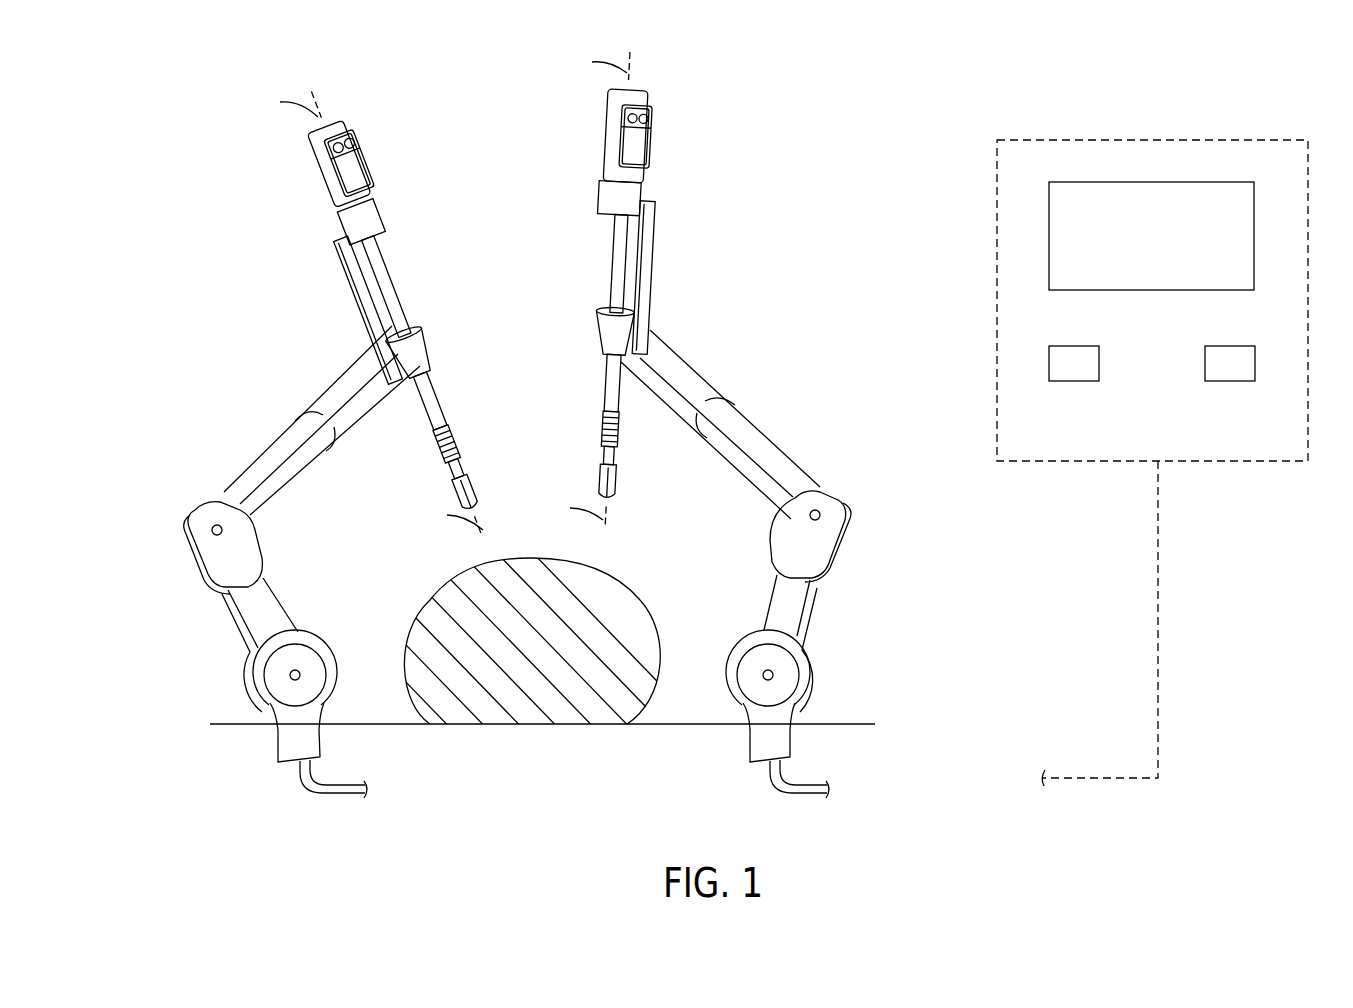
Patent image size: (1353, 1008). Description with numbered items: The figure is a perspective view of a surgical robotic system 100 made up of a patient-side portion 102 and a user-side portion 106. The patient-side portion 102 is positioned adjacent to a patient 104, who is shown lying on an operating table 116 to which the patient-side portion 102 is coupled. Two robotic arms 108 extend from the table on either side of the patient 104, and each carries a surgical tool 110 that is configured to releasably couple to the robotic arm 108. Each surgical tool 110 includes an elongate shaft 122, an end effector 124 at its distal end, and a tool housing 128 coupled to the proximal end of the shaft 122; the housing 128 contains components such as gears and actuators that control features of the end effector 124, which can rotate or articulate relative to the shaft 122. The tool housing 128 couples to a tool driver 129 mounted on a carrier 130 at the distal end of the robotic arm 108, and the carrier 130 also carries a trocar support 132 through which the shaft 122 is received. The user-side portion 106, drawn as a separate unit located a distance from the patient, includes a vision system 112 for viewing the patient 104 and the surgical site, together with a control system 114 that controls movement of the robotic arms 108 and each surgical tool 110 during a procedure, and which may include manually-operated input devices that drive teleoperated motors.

The surgical robotic system 100 is at (160, 132).
The patient-side portion 102 is at (784, 140).
The patient 104 is at (628, 593).
The user-side portion 106 is at (1152, 419).
The robotic arm 108 is at (273, 437).
The surgical tool 110 is at (400, 129).
The vision system 112 is at (1088, 182).
The control system 114 is at (1066, 382).
The operating table 116 is at (842, 723).
The elongate shaft 122 is at (388, 285).
The end effector 124 is at (465, 495).
The tool housing 128 is at (332, 188).
The tool driver 129 is at (373, 218).
The carrier 130 is at (353, 293).
The trocar support 132 is at (428, 343).